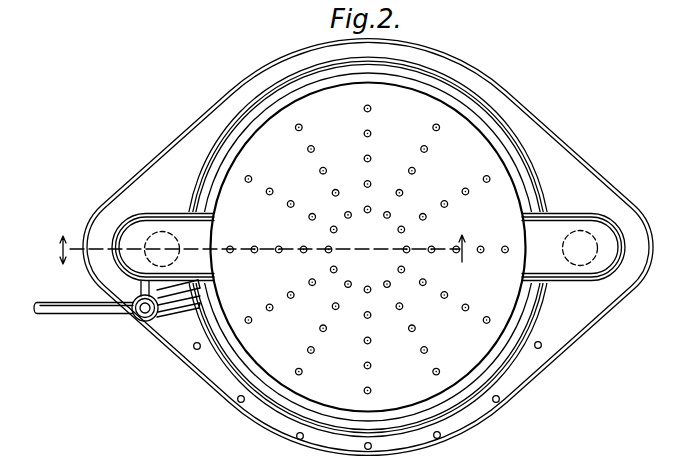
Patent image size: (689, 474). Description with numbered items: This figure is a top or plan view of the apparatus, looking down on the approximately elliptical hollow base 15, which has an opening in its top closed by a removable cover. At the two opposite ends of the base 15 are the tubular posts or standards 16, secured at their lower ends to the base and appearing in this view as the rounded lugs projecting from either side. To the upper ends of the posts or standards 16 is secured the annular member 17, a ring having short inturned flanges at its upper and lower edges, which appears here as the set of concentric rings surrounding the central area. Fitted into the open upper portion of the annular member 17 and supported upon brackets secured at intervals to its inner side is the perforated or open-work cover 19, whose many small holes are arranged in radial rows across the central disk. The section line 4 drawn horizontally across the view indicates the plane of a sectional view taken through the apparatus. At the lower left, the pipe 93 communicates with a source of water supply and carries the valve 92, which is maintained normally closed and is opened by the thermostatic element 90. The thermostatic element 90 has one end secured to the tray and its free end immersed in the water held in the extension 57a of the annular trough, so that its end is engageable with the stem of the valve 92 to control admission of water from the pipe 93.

The hollow base 15 is at (150, 175).
The tubular posts or standards 16 is at (581, 262).
The annular member 17 is at (507, 132).
The perforated or open-work cover 19 is at (368, 247).
The section line 4- 4 is at (260, 249).
The pipe 93 is at (80, 314).
The valve 92 is at (143, 321).
The thermostatic element 90 is at (168, 310).
The extension 57a is at (183, 318).